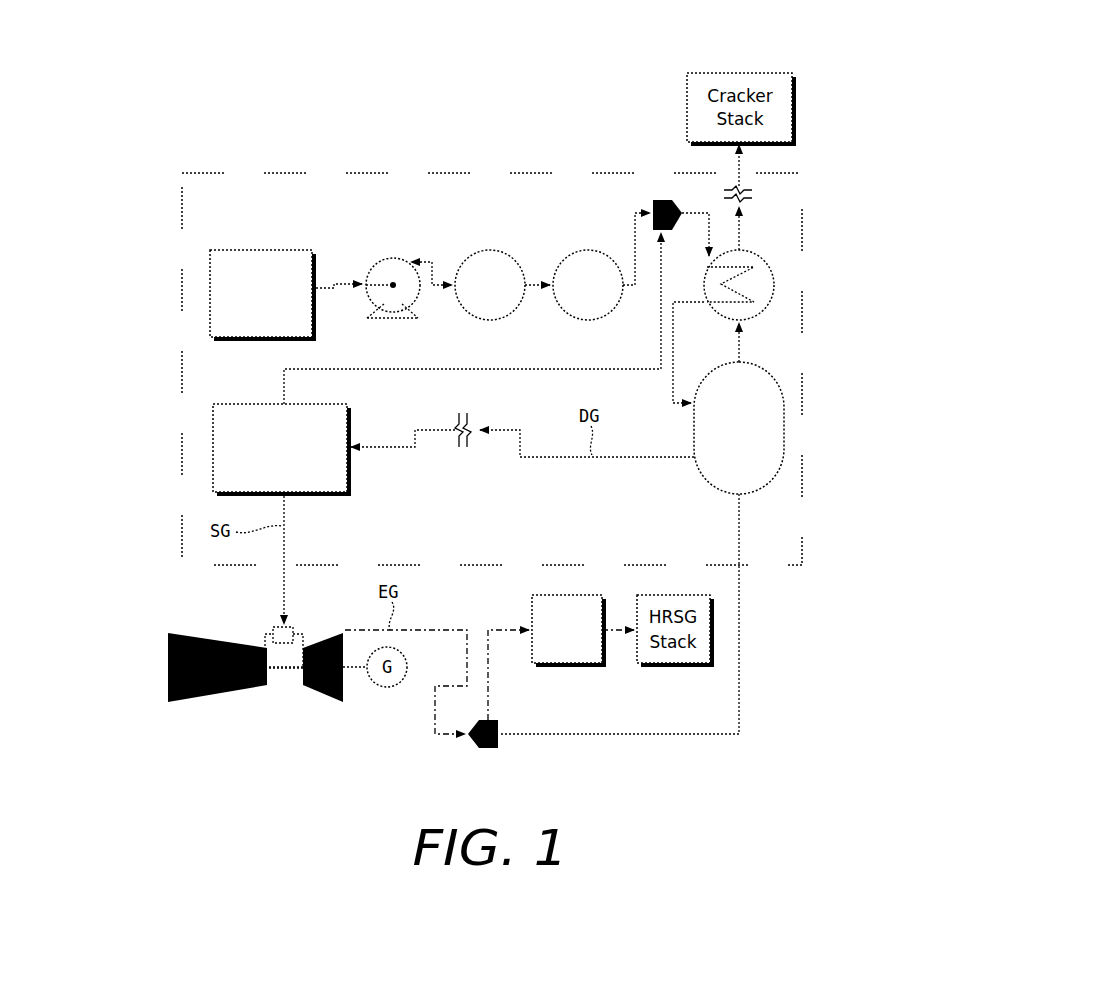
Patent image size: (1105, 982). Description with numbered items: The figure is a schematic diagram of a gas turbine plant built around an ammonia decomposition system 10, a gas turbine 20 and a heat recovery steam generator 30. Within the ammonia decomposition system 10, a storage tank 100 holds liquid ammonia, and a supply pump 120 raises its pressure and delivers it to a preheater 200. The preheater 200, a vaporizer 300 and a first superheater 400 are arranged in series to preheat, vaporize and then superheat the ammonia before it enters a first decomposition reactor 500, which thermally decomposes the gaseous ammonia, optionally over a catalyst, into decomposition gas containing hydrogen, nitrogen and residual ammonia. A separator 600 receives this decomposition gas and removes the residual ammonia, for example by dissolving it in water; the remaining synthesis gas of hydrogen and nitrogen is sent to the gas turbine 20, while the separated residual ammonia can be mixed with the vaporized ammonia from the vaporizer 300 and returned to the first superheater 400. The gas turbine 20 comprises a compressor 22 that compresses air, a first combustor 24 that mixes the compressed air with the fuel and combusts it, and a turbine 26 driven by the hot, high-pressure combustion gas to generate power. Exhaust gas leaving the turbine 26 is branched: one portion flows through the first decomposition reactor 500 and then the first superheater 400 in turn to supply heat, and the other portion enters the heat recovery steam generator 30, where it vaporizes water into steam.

The ammonia decomposition system 10 is at (186, 150).
The storage tank 100 is at (264, 250).
The supply pump 120 is at (394, 268).
The preheater 200 is at (491, 270).
The vaporizer 300 is at (589, 270).
The first superheater 400 is at (775, 283).
The first decomposition reactor 500 is at (786, 428).
The separator 600 is at (208, 446).
The gas turbine 20 is at (255, 702).
The compressor 22 is at (216, 690).
The first combustor 24 is at (281, 647).
The turbine 26 is at (323, 687).
The heat recovery steam generator 30 is at (568, 664).